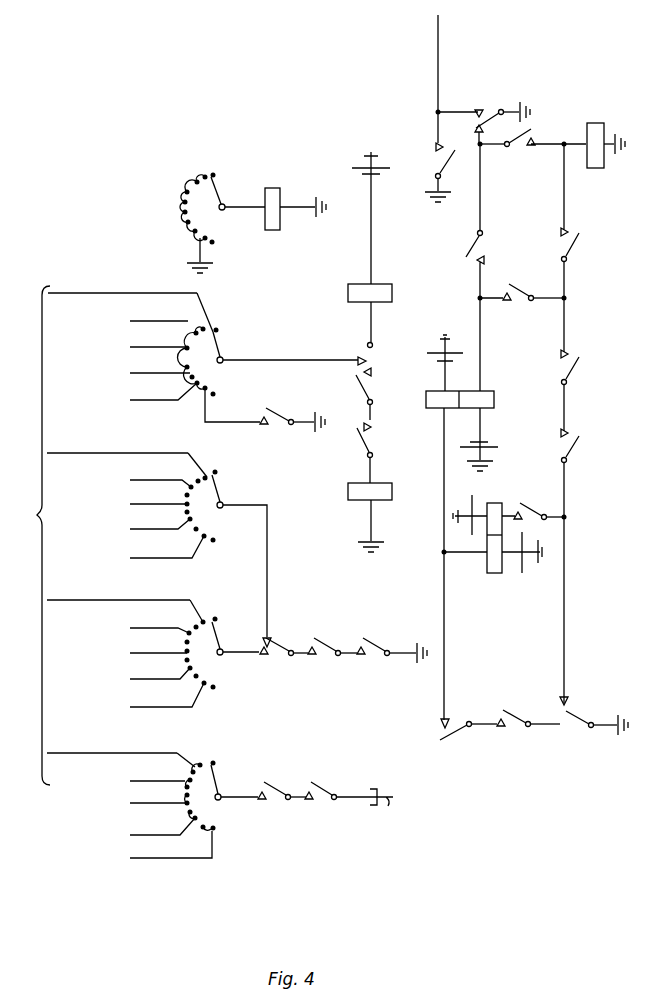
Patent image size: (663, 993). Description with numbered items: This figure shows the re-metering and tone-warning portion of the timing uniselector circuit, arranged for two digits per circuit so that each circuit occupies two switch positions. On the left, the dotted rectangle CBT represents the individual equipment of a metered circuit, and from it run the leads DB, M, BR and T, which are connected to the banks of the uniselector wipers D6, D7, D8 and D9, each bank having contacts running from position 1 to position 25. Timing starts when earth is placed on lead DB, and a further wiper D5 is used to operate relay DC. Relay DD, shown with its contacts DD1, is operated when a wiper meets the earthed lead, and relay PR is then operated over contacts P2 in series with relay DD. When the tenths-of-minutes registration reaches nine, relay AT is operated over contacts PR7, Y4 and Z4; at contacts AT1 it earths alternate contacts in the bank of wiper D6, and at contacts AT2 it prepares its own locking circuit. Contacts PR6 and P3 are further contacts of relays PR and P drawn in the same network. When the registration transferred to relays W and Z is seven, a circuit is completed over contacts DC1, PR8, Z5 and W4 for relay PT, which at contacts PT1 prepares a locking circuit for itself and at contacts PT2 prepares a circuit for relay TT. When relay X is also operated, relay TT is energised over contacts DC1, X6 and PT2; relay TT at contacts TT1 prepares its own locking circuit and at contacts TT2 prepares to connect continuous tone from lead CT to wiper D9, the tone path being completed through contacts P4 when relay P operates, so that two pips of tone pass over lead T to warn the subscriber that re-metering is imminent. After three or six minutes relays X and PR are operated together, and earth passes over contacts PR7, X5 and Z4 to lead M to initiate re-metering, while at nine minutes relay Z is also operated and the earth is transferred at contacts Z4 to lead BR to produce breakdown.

The individual equipment CBT is at (28, 535).
The lead DB is at (122, 282).
The lead M is at (117, 442).
The lead BR is at (118, 591).
The lead T is at (112, 742).
The wiper D5 is at (202, 224).
The wiper D6 is at (244, 357).
The stepping switch D7 is at (200, 550).
The stepping switch D8 is at (194, 653).
The wiper D9 is at (194, 804).
The position 1 is at (221, 174).
The contact position 25 is at (225, 246).
The contacts DC1 is at (284, 171).
The contacts AT1 is at (292, 414).
The contacts AT2 is at (611, 106).
The contacts Z4 is at (283, 658).
The contacts X5 is at (332, 658).
The contacts PR7 is at (391, 658).
The contacts TT2 is at (502, 596).
The contact P4 is at (337, 801).
The lead CT is at (382, 810).
The relay DD1 coil and contact DD1 is at (420, 293).
The contacts P2 is at (376, 381).
The contacts PR8 is at (420, 498).
The contact PR6 is at (433, 108).
The contact P3 is at (483, 118).
The contacts PT1 is at (460, 268).
The contacts W4 is at (523, 288).
The contacts Y4 is at (579, 249).
The contacts Z5 is at (580, 390).
The contacts PT2 is at (524, 402).
The contacts TT1 is at (534, 505).
The contacts X6 is at (527, 707).